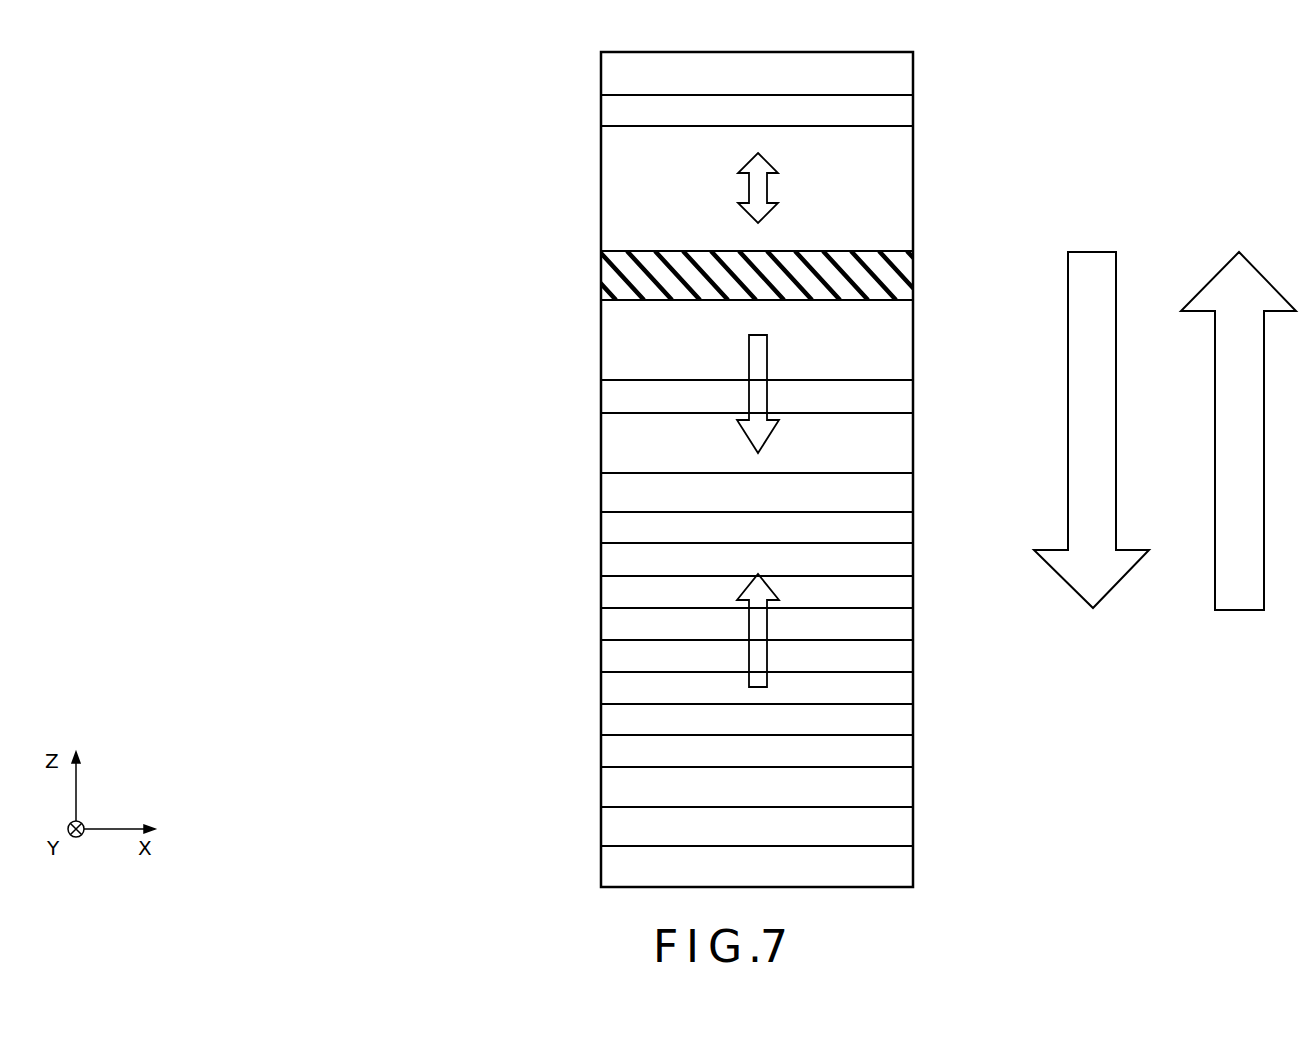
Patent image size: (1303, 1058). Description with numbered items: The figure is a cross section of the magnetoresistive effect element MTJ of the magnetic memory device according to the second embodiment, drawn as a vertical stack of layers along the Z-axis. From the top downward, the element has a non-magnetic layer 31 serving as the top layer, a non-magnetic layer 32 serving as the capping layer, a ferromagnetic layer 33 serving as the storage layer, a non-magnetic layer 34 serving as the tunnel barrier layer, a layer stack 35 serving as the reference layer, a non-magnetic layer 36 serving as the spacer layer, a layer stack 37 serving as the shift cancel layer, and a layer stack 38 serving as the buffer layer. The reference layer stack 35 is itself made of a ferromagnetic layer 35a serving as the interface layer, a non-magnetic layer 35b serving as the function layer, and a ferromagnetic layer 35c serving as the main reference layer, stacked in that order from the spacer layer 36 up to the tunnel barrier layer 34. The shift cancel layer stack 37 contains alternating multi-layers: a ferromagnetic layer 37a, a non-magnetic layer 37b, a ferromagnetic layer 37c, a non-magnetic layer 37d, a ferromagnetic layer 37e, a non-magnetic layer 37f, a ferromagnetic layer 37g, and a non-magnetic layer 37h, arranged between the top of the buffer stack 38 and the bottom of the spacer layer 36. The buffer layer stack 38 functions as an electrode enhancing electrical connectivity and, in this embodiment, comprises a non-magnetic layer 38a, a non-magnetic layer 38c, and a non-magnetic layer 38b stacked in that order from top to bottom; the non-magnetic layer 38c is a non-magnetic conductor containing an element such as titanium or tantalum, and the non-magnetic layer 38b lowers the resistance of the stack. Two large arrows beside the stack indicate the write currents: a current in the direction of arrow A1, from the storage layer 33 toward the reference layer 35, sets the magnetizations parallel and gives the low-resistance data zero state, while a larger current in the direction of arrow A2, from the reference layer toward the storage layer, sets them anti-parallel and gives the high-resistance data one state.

The non-magnetic layer 31 is at (601, 81).
The non-magnetic layer 32 is at (601, 112).
The ferromagnetic layer 33 is at (601, 189).
The non-magnetic layer 34 is at (601, 276).
The layer stack 35 is at (427, 302).
The ferromagnetic layer 35a is at (601, 345).
The non-magnetic layer 35b is at (601, 400).
The ferromagnetic layer 35c is at (601, 447).
The non-magnetic layer 36 is at (601, 495).
The layer stack 37 is at (425, 517).
The ferromagnetic layer 37a is at (601, 532).
The non-magnetic layer 37b is at (601, 564).
The ferromagnetic layer 37c is at (601, 597).
The non-magnetic layer 37d is at (601, 629).
The ferromagnetic layer 37e is at (601, 661).
The non-magnetic layer 37f is at (601, 692).
The ferromagnetic layer 37g is at (601, 723).
The non-magnetic layer 37h is at (601, 754).
The layer stack 38 is at (425, 777).
The non-magnetic layer 38a is at (601, 792).
The non-magnetic layer 38b is at (601, 870).
The non-magnetic layer 38c is at (601, 831).
The arrow A1 is at (1106, 597).
The arrow A2 is at (1256, 612).
The magnetoresistive effect element MTJ is at (304, 43).